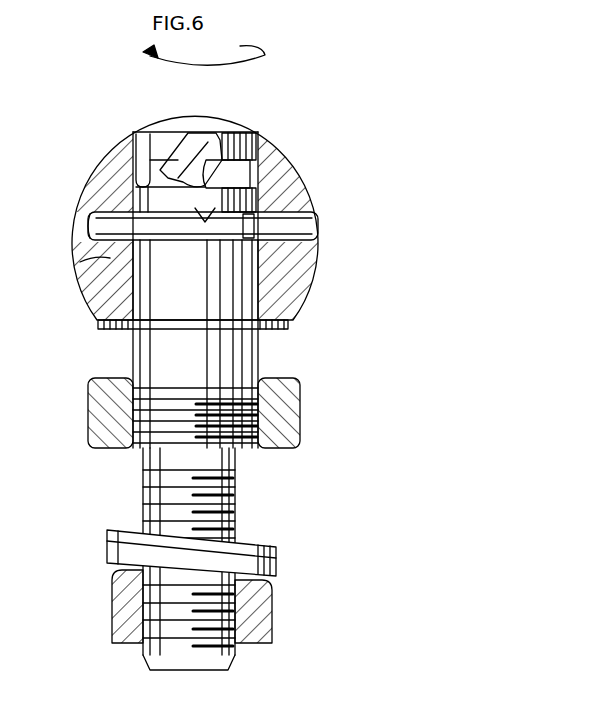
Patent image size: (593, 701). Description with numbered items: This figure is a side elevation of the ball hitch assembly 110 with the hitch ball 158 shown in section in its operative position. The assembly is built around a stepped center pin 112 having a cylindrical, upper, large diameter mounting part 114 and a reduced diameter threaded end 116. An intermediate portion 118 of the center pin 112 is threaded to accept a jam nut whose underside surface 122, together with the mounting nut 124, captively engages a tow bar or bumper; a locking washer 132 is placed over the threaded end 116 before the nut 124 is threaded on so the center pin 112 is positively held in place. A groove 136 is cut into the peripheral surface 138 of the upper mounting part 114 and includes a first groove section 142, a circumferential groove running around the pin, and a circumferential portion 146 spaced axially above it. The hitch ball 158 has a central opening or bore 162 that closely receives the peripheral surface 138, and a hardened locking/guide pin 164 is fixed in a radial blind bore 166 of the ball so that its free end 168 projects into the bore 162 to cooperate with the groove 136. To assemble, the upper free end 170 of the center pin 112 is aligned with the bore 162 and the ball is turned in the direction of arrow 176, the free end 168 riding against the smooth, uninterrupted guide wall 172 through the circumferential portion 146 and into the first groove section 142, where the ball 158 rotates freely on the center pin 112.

The ball hitch assembly 110 is at (345, 188).
The center pin 112 is at (222, 365).
The upper mounting part 114 is at (135, 351).
The threaded end 116 is at (240, 506).
The intermediate portion 118 is at (167, 418).
The underside surface 122 is at (283, 452).
The mounting nut 124 is at (262, 600).
The locking washer 132 is at (245, 553).
The groove 136 is at (206, 135).
The peripheral surface 138 is at (295, 280).
The first groove section 142 is at (318, 236).
The circumferential portion 146 is at (282, 162).
The hitch ball 158 is at (118, 143).
The central opening/bore 162 is at (103, 295).
The locking/guide pin 164 is at (100, 205).
The radial blind bore 166 is at (88, 230).
The free end 168 is at (100, 263).
The upper free end 170 is at (230, 123).
The upwardly facing guide wall 172 is at (105, 160).
The arrow 176 is at (245, 48).